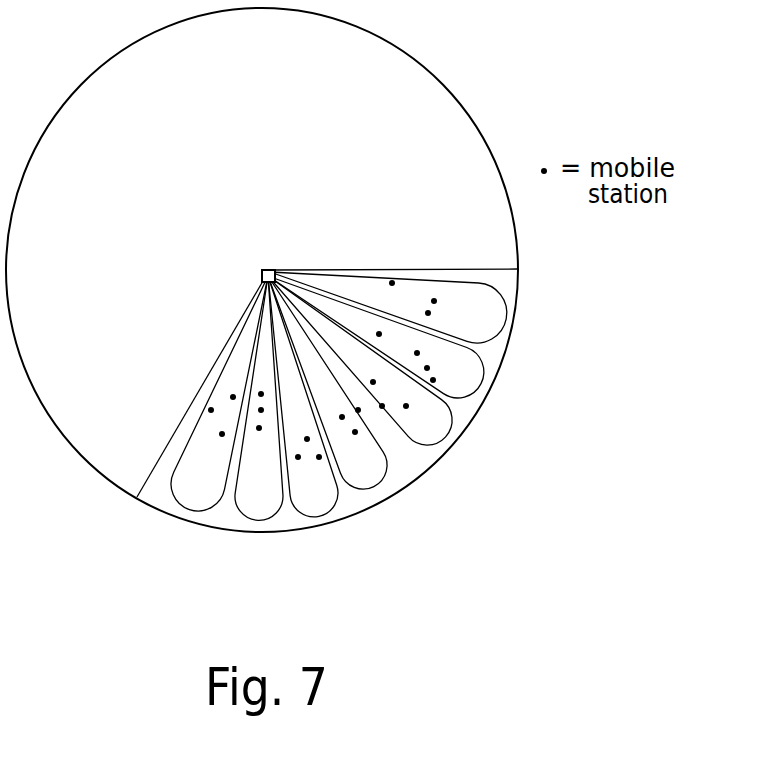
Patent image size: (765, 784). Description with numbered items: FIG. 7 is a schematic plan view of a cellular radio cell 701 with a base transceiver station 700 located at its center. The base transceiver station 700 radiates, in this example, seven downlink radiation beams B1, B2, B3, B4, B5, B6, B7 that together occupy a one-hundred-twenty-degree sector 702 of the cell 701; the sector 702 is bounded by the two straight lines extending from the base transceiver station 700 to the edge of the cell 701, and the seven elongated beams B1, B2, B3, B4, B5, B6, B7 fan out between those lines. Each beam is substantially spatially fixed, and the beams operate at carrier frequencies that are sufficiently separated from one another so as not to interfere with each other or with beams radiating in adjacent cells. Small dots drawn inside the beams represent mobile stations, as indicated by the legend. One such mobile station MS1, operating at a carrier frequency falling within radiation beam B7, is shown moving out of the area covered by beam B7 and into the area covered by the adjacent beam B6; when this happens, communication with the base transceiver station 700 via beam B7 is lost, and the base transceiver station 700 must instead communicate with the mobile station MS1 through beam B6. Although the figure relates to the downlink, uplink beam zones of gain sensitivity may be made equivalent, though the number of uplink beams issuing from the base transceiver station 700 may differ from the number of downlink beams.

The base transceiver station 700 is at (270, 269).
The cell 701 is at (323, 146).
The 120° sector 702 is at (365, 498).
The downlink beam B1 is at (219, 393).
The downlink beam B2 is at (259, 398).
The downlink beam B3 is at (303, 396).
The downlink beam B4 is at (330, 382).
The downlink beam B5 is at (360, 360).
The downlink beam B6 is at (376, 337).
The downlink beam B7 is at (388, 307).
The mobile station MS1 is at (376, 322).